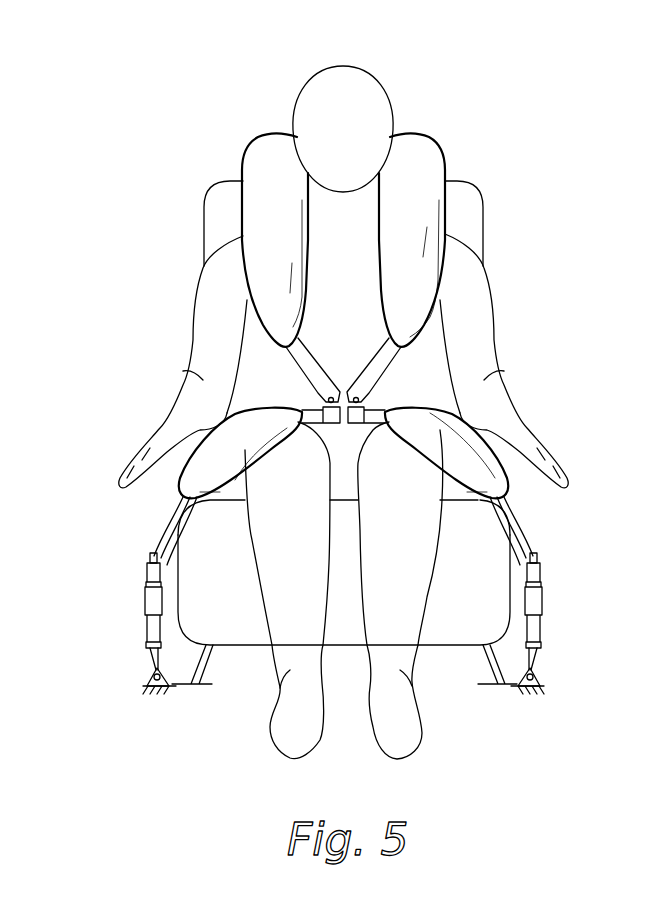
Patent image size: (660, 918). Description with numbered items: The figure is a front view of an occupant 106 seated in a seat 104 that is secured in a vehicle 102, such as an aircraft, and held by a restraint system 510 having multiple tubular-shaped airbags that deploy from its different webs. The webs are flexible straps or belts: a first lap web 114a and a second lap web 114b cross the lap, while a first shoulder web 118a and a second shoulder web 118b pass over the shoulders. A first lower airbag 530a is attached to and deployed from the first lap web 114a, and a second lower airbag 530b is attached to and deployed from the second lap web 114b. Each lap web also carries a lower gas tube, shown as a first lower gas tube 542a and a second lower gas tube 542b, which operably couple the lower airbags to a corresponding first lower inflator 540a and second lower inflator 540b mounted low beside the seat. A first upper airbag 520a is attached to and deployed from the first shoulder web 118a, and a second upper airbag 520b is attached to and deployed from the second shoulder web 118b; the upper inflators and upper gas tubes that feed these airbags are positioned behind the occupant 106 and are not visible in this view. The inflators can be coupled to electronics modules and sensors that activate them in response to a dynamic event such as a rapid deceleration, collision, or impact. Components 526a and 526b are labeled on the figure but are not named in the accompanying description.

The restraint system 510 is at (142, 118).
The first upper airbag 520a is at (427, 158).
The second upper airbag 520b is at (258, 167).
The first shoulder web 118a is at (384, 366).
The second shoulder web 118b is at (300, 360).
The first lower airbag 530a is at (484, 428).
The second lower airbag 530b is at (243, 425).
The first lower gas tube 542a is at (527, 512).
The second lower gas tube 542b is at (160, 512).
The first lap web 114a is at (536, 543).
The second lap web 114b is at (152, 548).
The right actuator 526a is at (542, 602).
The left actuator 526b is at (147, 606).
The first lower inflator 540a is at (542, 628).
The second lower inflator 540b is at (148, 625).
The vehicle 102 is at (500, 764).
The seat 104 is at (457, 627).
The occupant 106 is at (273, 737).